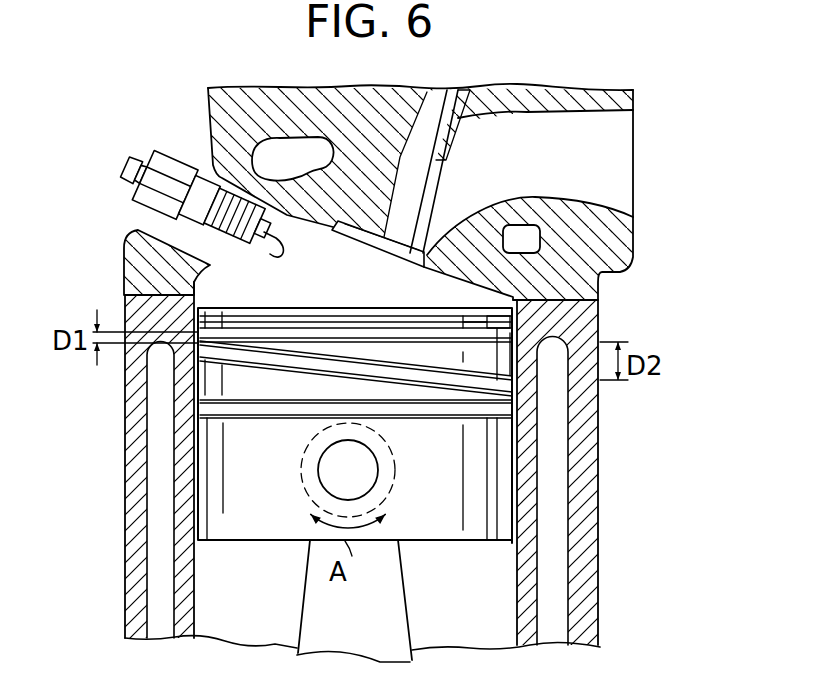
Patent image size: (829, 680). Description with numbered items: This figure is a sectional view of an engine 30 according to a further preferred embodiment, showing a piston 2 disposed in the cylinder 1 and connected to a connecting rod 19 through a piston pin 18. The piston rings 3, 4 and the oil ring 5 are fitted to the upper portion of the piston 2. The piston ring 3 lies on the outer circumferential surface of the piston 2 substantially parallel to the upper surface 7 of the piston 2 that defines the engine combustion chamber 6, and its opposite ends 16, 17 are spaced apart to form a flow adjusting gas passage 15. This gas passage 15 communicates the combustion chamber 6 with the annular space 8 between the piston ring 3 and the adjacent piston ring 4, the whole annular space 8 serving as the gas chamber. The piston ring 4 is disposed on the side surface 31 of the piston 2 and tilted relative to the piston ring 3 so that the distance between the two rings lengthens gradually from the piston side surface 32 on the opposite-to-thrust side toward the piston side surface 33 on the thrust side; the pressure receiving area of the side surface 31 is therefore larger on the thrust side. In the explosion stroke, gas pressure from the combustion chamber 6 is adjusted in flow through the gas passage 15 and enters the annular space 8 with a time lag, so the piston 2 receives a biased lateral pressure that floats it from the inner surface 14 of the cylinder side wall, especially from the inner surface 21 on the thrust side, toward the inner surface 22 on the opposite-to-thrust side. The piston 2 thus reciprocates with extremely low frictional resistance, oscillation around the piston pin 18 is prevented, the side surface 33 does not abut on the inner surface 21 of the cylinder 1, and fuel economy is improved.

The cylinder 1 is at (128, 508).
The piston 2 is at (513, 480).
The piston ring 3 is at (122, 258).
The piston ring 4 is at (175, 358).
The oil ring 5 is at (197, 407).
The engine combustion chamber 6 is at (147, 230).
The upper surface of the piston 7 is at (357, 308).
The annular space 8 is at (518, 398).
The inner surface of the side wall of the cylinder 14 is at (198, 583).
The flow adjusting gas passage 15 is at (478, 328).
The end of the piston ring 16 is at (603, 312).
The end of the piston ring 17 is at (460, 326).
The piston pin 18 is at (330, 470).
The connecting rod 19 is at (406, 604).
The inner surface of the side wall of the cylinder on the thrust side 21 is at (516, 588).
The inner surface of the side wall of the cylinder on the opposite-to-thrust side 22 is at (198, 540).
The engine 30 is at (83, 454).
The side surface of the piston 31 is at (518, 433).
The piston side surface on the opposite-to-thrust side 32 is at (196, 456).
The piston side surface on the thrust side 33 is at (518, 520).